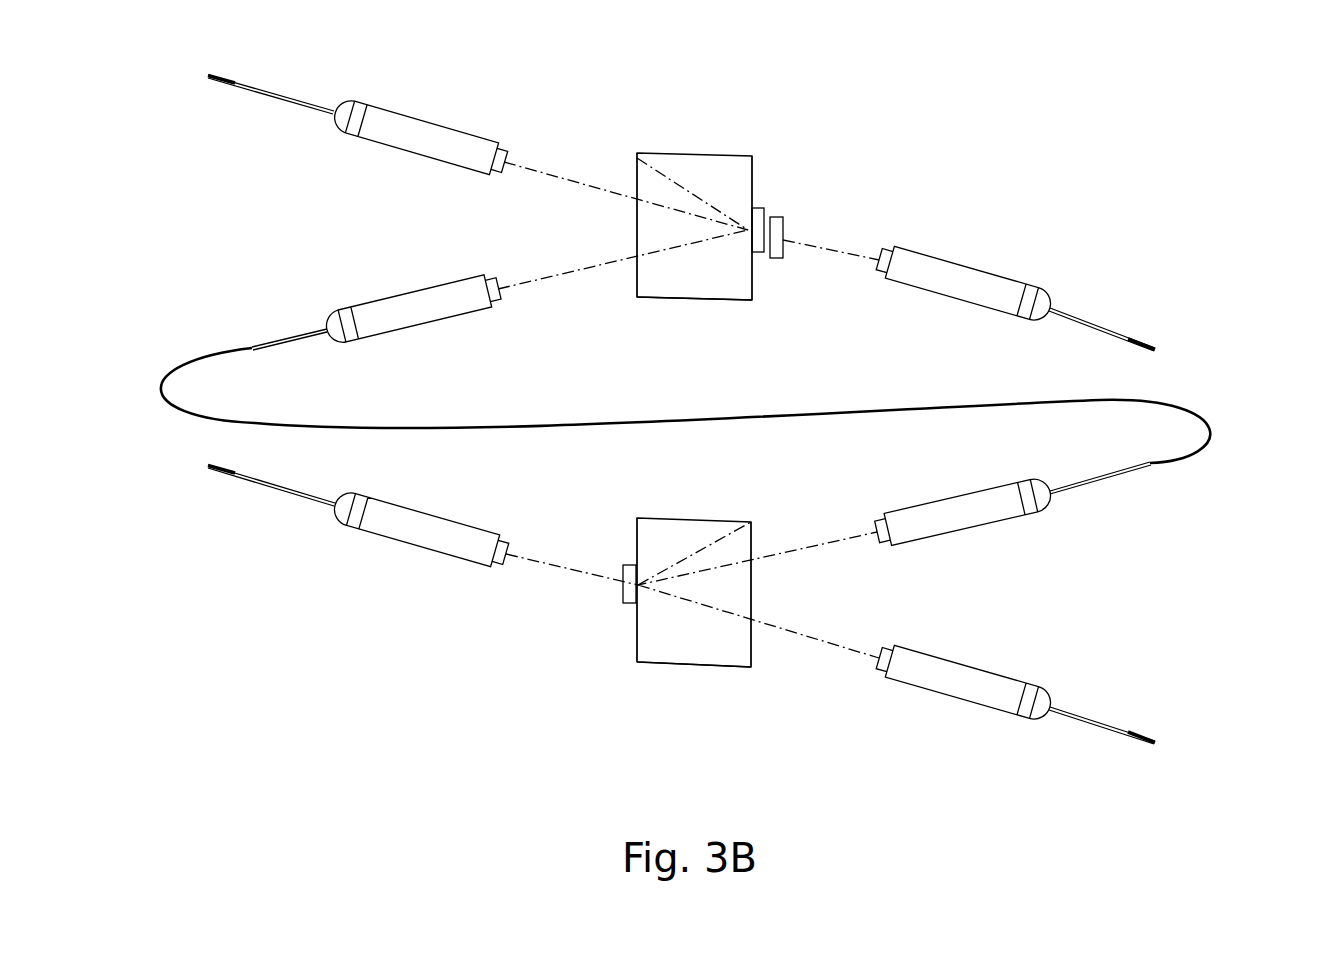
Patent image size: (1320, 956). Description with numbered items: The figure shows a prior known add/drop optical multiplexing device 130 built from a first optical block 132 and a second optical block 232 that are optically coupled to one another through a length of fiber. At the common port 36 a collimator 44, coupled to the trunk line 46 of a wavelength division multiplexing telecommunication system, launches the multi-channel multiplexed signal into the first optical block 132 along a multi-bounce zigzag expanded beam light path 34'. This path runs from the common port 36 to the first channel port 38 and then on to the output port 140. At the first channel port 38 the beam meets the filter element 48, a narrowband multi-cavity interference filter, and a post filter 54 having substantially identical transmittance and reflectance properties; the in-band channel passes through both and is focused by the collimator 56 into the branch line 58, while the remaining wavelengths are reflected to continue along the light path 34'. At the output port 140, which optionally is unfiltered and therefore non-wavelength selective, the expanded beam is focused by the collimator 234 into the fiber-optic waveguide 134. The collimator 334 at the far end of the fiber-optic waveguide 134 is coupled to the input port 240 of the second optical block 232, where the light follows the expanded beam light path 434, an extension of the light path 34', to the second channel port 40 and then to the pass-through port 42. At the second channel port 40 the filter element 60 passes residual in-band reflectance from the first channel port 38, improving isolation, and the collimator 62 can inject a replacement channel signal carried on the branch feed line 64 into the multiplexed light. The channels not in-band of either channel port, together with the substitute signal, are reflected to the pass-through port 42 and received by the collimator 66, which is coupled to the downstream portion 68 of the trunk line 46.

The optical multiplexing device 130 is at (1195, 190).
The first optical block 132 is at (732, 299).
The second optical block 232 is at (673, 665).
The fiber-optic waveguide 134 is at (852, 410).
The multi-bounce zigzag expanded beam light path 34' is at (692, 194).
The common port 36 is at (632, 197).
The first channel port 38 is at (748, 230).
The second channel port 40 is at (638, 582).
The pass-through port 42 is at (750, 622).
The collimator 44 is at (458, 148).
The trunk line 46 is at (268, 85).
The filter element 48 is at (758, 208).
The post filter 54 is at (777, 217).
The collimator 56 is at (960, 292).
The branch line 58 is at (1083, 333).
The filter element 60 is at (625, 607).
The collimator 62 is at (400, 523).
The branch feed line 64 is at (248, 478).
The collimator 66 is at (983, 697).
The downstream portion of trunk line 68 is at (1110, 733).
The output port 140 is at (638, 253).
The collimator 234 is at (397, 313).
The collimator 334 is at (990, 503).
The expanded beam light path 434 is at (695, 568).
The input port 240 is at (745, 552).